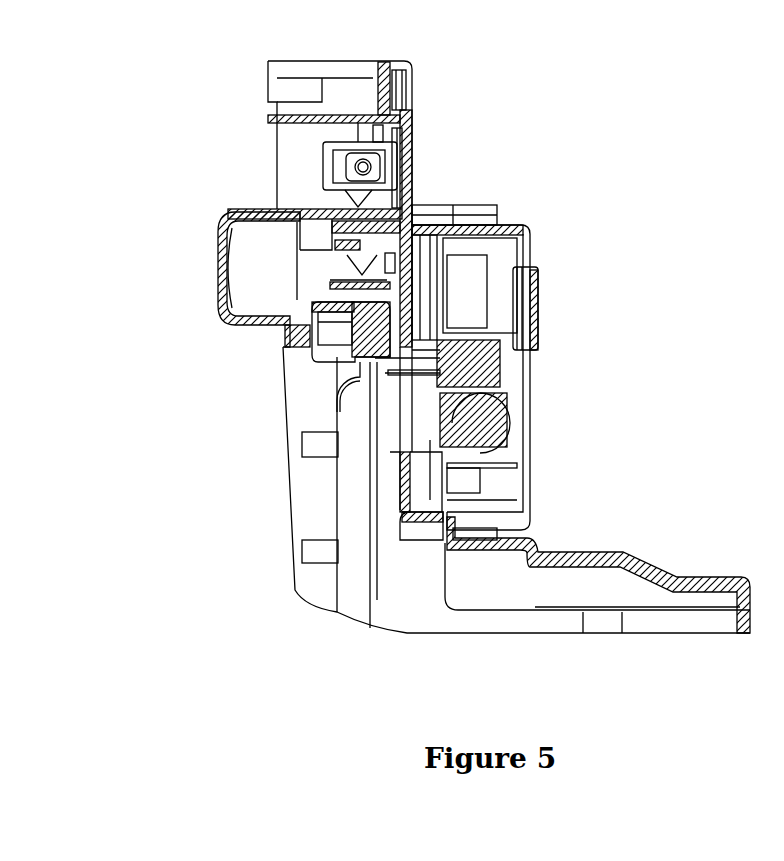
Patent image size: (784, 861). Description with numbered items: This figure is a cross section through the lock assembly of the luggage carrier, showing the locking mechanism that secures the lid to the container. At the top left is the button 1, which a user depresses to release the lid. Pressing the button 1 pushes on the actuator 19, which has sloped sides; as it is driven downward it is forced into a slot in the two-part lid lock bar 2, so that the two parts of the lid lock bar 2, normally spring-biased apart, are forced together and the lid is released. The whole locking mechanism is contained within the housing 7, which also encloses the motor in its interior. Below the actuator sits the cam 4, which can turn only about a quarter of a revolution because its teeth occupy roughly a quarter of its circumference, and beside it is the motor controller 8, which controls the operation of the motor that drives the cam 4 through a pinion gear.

The button 1 is at (222, 222).
The lid lock bar 2 is at (411, 118).
The cam 4 is at (368, 503).
The housing 7 is at (670, 577).
The motor controller 8 is at (450, 388).
The actuator 19 is at (315, 207).